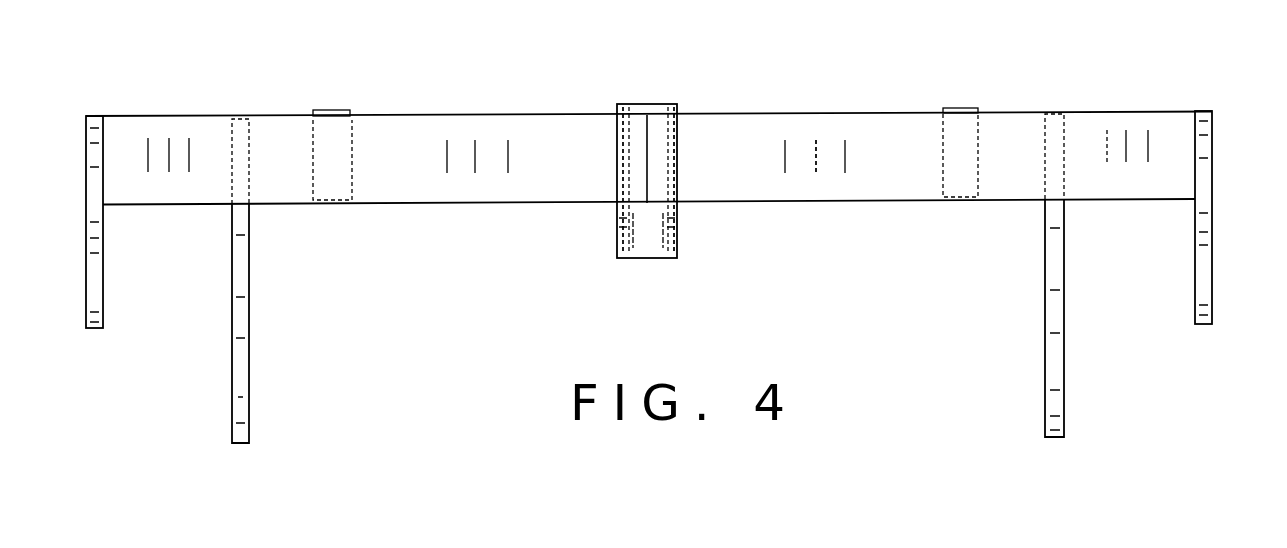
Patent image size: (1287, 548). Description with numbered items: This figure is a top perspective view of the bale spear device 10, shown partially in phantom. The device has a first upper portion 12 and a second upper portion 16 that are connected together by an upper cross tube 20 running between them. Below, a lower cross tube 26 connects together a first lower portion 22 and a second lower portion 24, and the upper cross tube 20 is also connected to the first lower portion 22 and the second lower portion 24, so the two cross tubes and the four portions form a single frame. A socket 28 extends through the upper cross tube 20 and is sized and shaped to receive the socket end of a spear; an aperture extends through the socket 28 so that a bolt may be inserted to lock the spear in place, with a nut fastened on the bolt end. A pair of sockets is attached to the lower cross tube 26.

The bale spear device 10 is at (417, 97).
The first upper portion 12 is at (103, 293).
The second upper portion 16 is at (1212, 265).
The upper cross tube 20 is at (808, 114).
The first lower portion 22 is at (250, 387).
The second lower portion 24 is at (1045, 324).
The lower cross tube 26 is at (815, 182).
The socket 28 is at (647, 260).